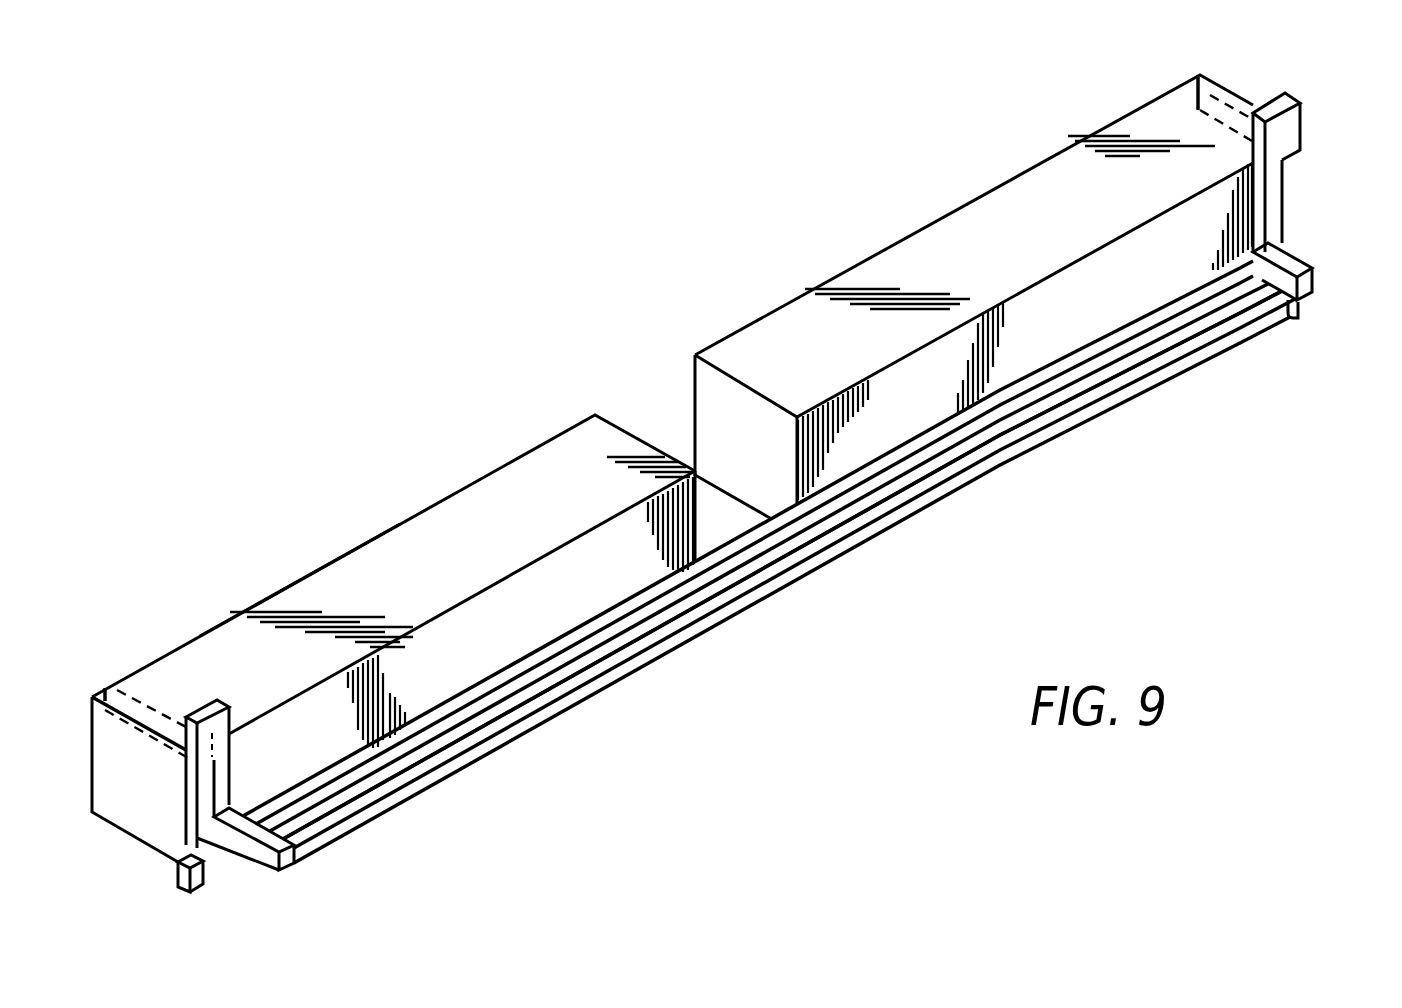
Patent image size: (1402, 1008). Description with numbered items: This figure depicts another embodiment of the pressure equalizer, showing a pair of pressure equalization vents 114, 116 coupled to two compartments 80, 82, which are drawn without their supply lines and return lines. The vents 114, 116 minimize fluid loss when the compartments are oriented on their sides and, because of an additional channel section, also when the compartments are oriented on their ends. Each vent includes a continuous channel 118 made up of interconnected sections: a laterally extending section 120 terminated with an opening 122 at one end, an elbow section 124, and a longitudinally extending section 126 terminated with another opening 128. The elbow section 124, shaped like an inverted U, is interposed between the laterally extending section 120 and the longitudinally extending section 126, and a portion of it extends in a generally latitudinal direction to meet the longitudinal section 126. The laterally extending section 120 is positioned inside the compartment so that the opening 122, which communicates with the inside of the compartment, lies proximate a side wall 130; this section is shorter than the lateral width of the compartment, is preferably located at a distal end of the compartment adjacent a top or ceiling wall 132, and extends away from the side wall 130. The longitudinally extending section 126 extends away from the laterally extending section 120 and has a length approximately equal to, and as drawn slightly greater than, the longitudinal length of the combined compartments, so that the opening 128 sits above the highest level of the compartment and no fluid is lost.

The compartment 80 is at (503, 466).
The compartment 82 is at (890, 250).
The pressure equalization vent 114 is at (1308, 283).
The pressure equalization vent 116 is at (1292, 184).
The continuous channel 118 is at (590, 604).
The laterally extending section 120 is at (158, 720).
The opening 122 is at (112, 700).
The elbow section 124 is at (225, 720).
The longitudinally extending section 126 is at (487, 690).
The opening 128 is at (170, 888).
The side wall 130 is at (301, 580).
The top or ceiling wall 132 is at (450, 528).